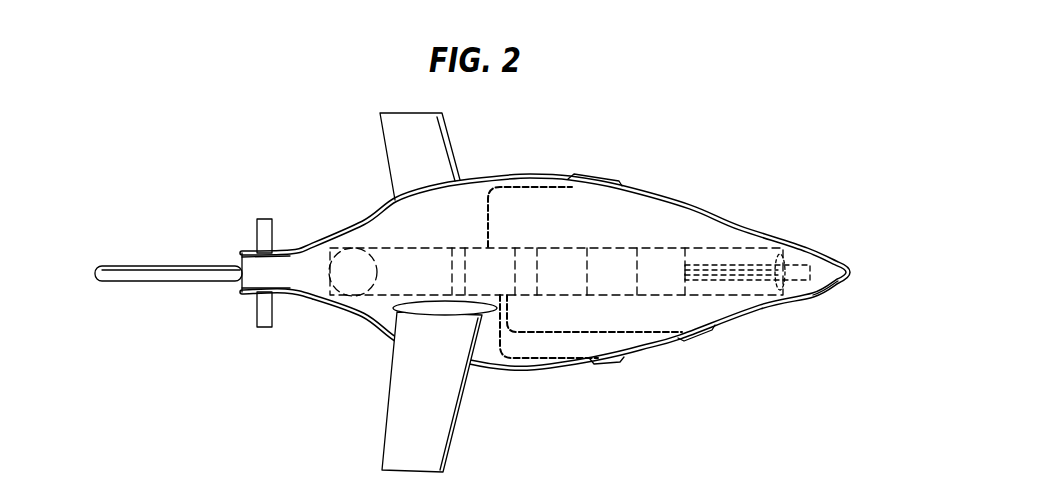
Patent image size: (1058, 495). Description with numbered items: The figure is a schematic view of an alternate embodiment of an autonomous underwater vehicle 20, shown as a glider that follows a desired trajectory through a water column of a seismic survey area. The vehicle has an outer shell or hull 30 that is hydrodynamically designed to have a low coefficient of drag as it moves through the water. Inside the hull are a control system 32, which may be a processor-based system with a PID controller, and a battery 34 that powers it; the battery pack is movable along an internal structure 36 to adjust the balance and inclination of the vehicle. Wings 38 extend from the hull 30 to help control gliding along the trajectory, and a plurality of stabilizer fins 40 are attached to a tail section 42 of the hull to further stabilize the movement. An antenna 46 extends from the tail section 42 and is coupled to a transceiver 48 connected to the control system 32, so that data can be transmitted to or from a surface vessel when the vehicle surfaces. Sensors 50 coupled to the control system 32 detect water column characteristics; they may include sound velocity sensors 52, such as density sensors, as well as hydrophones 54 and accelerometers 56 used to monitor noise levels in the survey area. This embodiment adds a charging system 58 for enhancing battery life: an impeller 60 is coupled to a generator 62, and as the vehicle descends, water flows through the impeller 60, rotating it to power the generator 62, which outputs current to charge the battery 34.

The autonomous underwater vehicle 20 is at (471, 291).
The hull 30 is at (742, 322).
The control system 32 is at (478, 255).
The battery 34 is at (560, 257).
The internal structure 36 is at (608, 253).
The wings 38 is at (455, 147).
The stabilizer fins 40 is at (258, 317).
The tail section 42 is at (288, 283).
The antenna 46 is at (168, 265).
The transceiver 48 is at (450, 267).
The sensors 50 is at (607, 269).
The sound velocity sensors 52 is at (623, 187).
The hydrophones 54 is at (607, 365).
The accelerometers 56 is at (703, 333).
The charging system 58 is at (762, 309).
The impeller 60 is at (778, 258).
The generator 62 is at (672, 262).